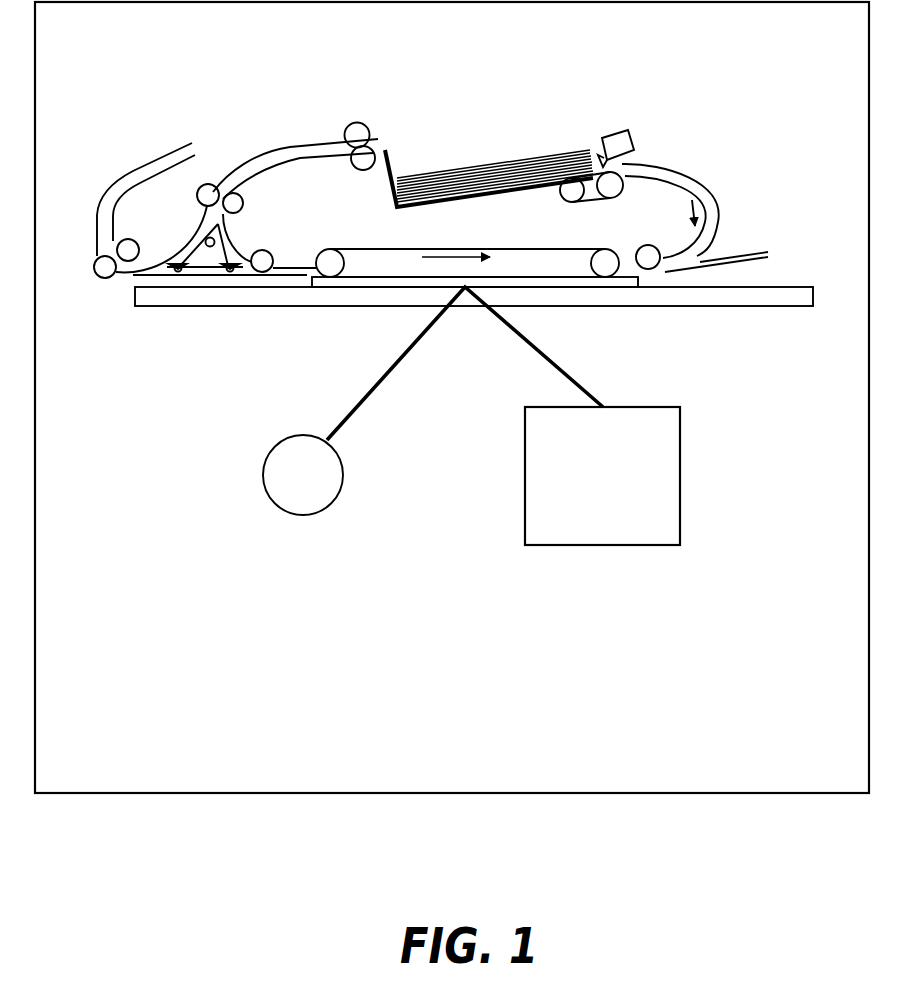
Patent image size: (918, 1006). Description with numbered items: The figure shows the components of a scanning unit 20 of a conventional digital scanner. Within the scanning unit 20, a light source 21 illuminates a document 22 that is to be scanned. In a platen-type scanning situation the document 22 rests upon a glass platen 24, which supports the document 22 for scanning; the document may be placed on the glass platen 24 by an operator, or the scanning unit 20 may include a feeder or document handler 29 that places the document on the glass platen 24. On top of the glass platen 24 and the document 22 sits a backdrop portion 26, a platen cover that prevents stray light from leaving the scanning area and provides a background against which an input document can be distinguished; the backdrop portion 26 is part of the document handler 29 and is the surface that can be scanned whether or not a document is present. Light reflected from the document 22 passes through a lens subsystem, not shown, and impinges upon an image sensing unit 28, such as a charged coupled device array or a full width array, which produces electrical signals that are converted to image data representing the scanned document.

The scanning unit 20 is at (233, 783).
The light source 21 is at (295, 502).
The document 22 is at (385, 282).
The glass platen 24 is at (313, 298).
The backdrop portion 26 is at (538, 272).
The image sensing unit 28 is at (602, 476).
The document handler 29 is at (656, 125).